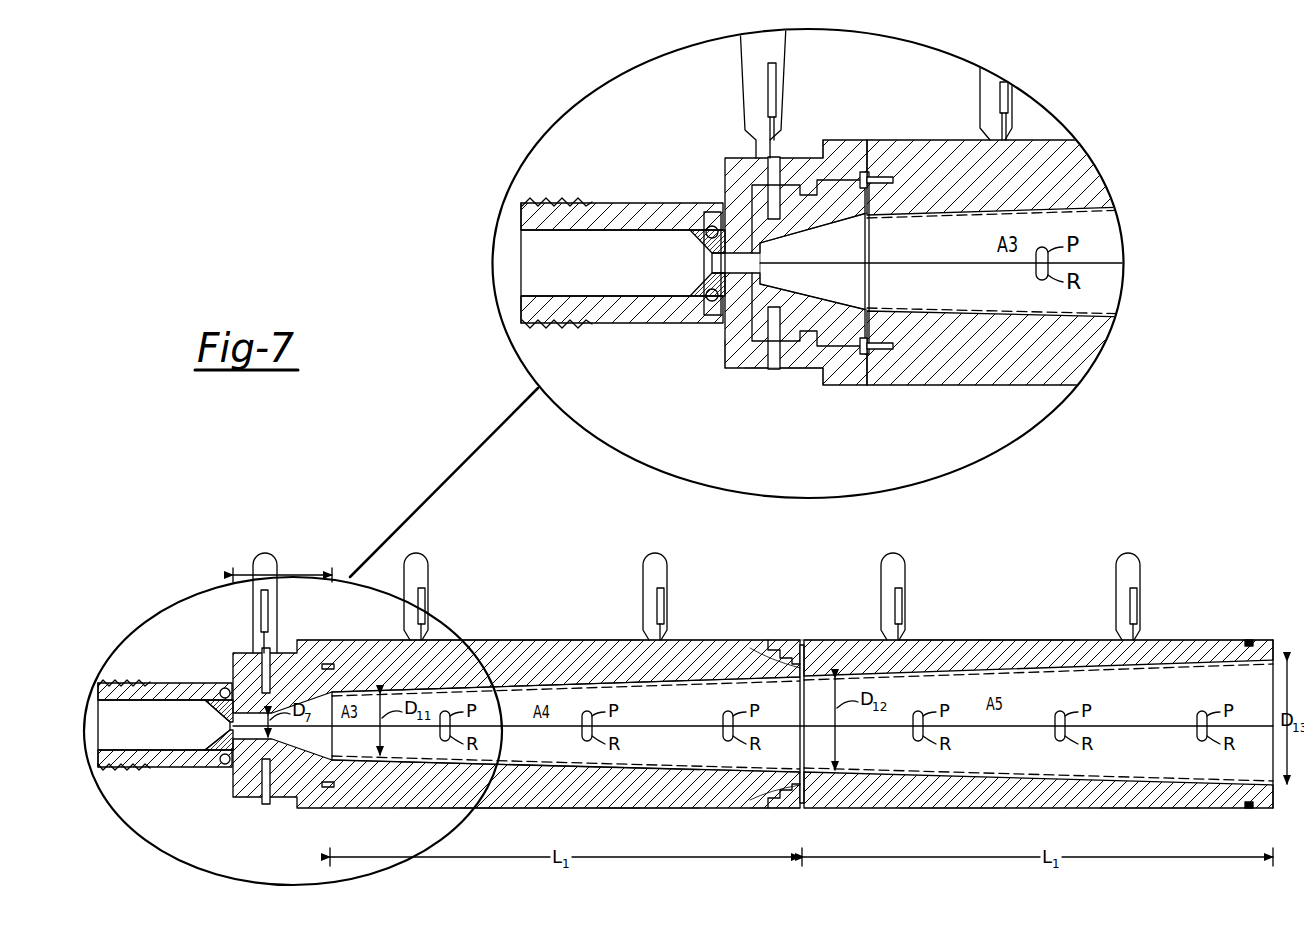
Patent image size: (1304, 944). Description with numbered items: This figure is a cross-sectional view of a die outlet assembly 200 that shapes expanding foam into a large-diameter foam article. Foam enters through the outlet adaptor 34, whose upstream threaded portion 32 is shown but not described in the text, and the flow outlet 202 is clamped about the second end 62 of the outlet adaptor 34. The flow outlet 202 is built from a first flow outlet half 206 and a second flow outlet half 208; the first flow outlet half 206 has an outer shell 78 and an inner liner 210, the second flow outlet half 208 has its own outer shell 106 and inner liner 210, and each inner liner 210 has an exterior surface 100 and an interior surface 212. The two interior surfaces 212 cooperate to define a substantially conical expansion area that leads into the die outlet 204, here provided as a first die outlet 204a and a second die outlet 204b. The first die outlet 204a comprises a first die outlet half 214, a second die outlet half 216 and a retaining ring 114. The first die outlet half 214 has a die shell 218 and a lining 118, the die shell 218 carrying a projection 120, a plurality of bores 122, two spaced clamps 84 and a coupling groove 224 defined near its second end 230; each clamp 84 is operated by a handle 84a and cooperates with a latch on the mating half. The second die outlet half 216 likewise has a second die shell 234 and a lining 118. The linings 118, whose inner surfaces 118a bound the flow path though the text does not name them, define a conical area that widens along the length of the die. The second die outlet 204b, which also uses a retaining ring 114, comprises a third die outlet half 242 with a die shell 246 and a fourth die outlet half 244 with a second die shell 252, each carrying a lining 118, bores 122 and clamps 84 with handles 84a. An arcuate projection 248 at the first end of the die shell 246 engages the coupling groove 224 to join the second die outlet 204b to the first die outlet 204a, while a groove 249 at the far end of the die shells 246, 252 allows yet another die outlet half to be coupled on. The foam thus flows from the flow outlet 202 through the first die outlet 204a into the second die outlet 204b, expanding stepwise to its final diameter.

The nozzle body 32 is at (196, 672).
The outlet adaptor 34 is at (205, 733).
The second end 62 is at (712, 303).
The outer shell 78 is at (805, 156).
The clamp 84 is at (276, 556).
The handle 84a is at (265, 562).
The exterior surface 100 is at (877, 207).
The outer shell 106 is at (795, 372).
The retaining ring 114 is at (805, 645).
The lining 118 is at (633, 690).
The conical inner wall 118a is at (798, 682).
The projection 120 is at (838, 158).
The bores 122 is at (880, 178).
The die outlet assembly 200 is at (862, 580).
The flow outlet 202 is at (760, 375).
The die outlet 204 is at (582, 820).
The first die outlet 204a is at (636, 815).
The second die outlet 204b is at (1045, 815).
The first flow outlet half 206 is at (228, 648).
The second flow outlet half 208 is at (725, 372).
The inner liner 210 is at (867, 232).
The interior surface 212 is at (793, 235).
The first die outlet half 214 is at (521, 628).
The second die outlet half 216 is at (514, 818).
The die shell 218 is at (560, 632).
The coupling groove 224 is at (790, 650).
The second end 230 is at (760, 818).
The second die shell 234 is at (489, 818).
The third die outlet half 242 is at (956, 630).
The fourth die outlet half 244 is at (962, 816).
The die shell 246 is at (1035, 632).
The projection 248 is at (775, 668).
The groove 249 is at (1248, 640).
The second die shell 252 is at (1145, 815).